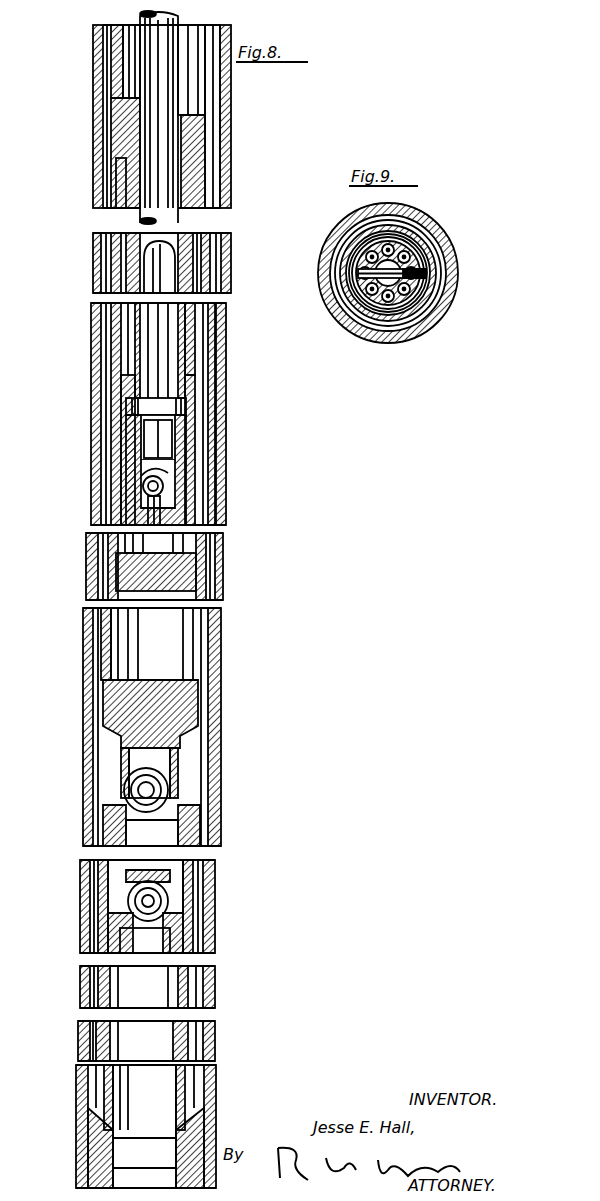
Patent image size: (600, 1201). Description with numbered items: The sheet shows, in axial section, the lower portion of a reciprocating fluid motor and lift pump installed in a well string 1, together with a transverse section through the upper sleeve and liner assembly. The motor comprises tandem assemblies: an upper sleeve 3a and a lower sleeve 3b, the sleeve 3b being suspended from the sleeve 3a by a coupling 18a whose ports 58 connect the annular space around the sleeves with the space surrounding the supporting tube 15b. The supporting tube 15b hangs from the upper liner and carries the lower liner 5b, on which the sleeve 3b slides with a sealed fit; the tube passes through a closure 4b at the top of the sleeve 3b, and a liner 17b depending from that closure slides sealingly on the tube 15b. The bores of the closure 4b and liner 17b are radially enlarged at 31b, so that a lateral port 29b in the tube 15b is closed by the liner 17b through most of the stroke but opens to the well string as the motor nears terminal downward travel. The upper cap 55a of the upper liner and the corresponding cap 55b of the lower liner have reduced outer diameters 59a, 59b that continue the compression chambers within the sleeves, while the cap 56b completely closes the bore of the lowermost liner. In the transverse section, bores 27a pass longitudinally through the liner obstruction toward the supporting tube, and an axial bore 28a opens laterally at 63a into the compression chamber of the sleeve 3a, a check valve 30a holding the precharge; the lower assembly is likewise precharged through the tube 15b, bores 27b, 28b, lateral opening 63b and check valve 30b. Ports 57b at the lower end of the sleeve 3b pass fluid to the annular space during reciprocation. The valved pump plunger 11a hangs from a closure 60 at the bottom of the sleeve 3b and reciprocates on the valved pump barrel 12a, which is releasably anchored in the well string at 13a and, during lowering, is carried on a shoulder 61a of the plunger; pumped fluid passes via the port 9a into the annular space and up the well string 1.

In FIG. 8, the well string 1 is at (212, 556).
In FIG. 9, the well string 1 is at (424, 313).
In FIG. 9, the sleeve 3a is at (358, 310).
In FIG. 8, the sleeve 3b is at (103, 343).
In FIG. 8, the closure 4b is at (185, 135).
In FIG. 8, the liner 5b is at (140, 503).
In FIG. 8, the port 9a is at (118, 778).
In FIG. 8, the valved pump plunger 11a is at (100, 878).
In FIG. 8, the valved pump barrel 12a is at (90, 950).
In FIG. 8, the releasable anchor 13a is at (96, 1110).
In FIG. 8, the supporting tube 15b is at (160, 74).
In FIG. 8, the liner 17b is at (110, 260).
In FIG. 8, the coupling 18a is at (103, 28).
In FIG. 9, the bores 27a is at (352, 300).
In FIG. 8, the bores 27b is at (135, 473).
In FIG. 9, the axial bore 28a is at (392, 297).
In FIG. 8, the axial bore 28b is at (138, 418).
In FIG. 8, the lateral port 29b is at (170, 256).
In FIG. 9, the check valve 30a is at (392, 237).
In FIG. 8, the check valve 30b is at (100, 533).
In FIG. 8, the radially enlarged bore 31b is at (130, 138).
In FIG. 9, the cap 55a is at (342, 256).
In FIG. 8, the cap 55b is at (182, 358).
In FIG. 8, the cap 56b is at (130, 563).
In FIG. 8, the ports 57b is at (100, 638).
In FIG. 8, the ports 58 is at (118, 68).
In FIG. 9, the reduced diameter 59a is at (408, 246).
In FIG. 8, the reduced diameter 59b is at (178, 396).
In FIG. 8, the closure 60 is at (165, 688).
In FIG. 8, the shoulder 61a is at (175, 1011).
In FIG. 9, the lateral opening 63a is at (418, 267).
In FIG. 8, the lateral opening 63b is at (165, 428).